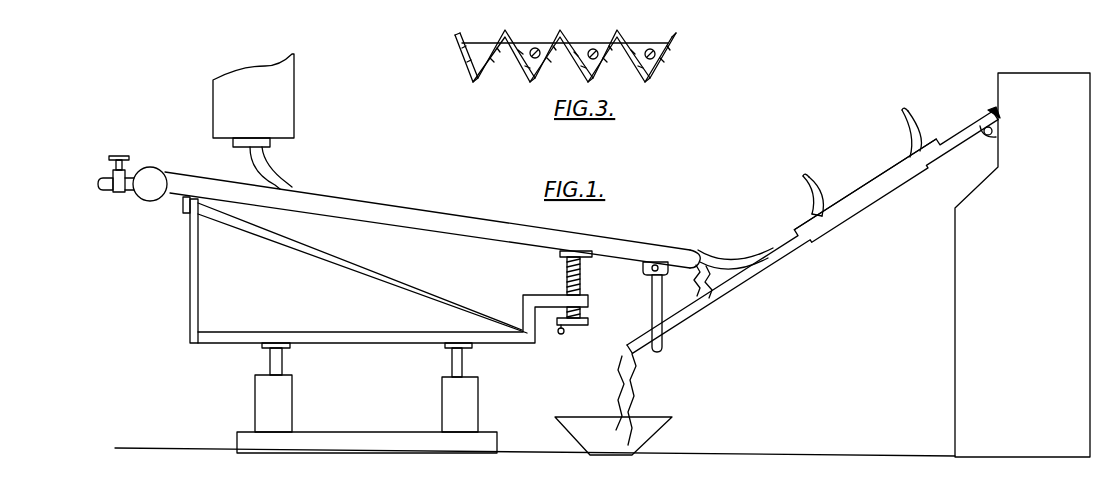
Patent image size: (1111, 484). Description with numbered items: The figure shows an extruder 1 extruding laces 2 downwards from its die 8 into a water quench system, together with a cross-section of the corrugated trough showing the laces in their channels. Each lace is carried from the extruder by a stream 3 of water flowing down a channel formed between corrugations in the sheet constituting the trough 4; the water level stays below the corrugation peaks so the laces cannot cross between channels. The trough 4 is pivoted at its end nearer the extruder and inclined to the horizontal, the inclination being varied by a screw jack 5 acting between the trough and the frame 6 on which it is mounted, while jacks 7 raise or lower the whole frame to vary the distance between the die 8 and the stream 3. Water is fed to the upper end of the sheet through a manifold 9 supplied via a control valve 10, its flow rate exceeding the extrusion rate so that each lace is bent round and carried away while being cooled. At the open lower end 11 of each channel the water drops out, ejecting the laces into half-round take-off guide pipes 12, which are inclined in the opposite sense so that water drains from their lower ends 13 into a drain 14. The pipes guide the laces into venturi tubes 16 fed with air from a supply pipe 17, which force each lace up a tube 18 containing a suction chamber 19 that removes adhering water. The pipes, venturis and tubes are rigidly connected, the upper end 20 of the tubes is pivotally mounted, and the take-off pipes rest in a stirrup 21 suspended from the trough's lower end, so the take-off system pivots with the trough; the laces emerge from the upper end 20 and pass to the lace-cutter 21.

In FIG. 1, the extruder 1 is at (285, 82).
In FIG. 1, the laces 2 is at (257, 178).
In FIG. 3, the laces 2 is at (538, 49).
In FIG. 1, the stream of water 3 is at (700, 278).
In FIG. 3, the stream of water 3 is at (527, 47).
In FIG. 1, the trough 4 is at (368, 201).
In FIG. 3, the trough 4 is at (543, 64).
In FIG. 1, the screw jack 5 is at (582, 312).
In FIG. 1, the frame 6 is at (189, 297).
In FIG. 1, the jacks 7 is at (440, 427).
In FIG. 1, the die 8 is at (270, 143).
In FIG. 1, the manifold 9 is at (152, 201).
In FIG. 1, the control valve 10 is at (115, 192).
In FIG. 1, the lower end of channel 11 is at (680, 251).
In FIG. 1, the take-off guide pipes 12 is at (751, 271).
In FIG. 1, the lower ends of pipes 13 is at (634, 356).
In FIG. 1, the drain 14 is at (660, 420).
In FIG. 1, the venturi tubes 16 is at (817, 209).
In FIG. 1, the supply pipe 17 is at (800, 191).
In FIG. 1, the tube 18 is at (849, 212).
In FIG. 1, the suction chamber 19 is at (908, 157).
In FIG. 1, the upper end of tubes 20 is at (989, 117).
In FIG. 1, the stirrup 21 is at (1037, 75).